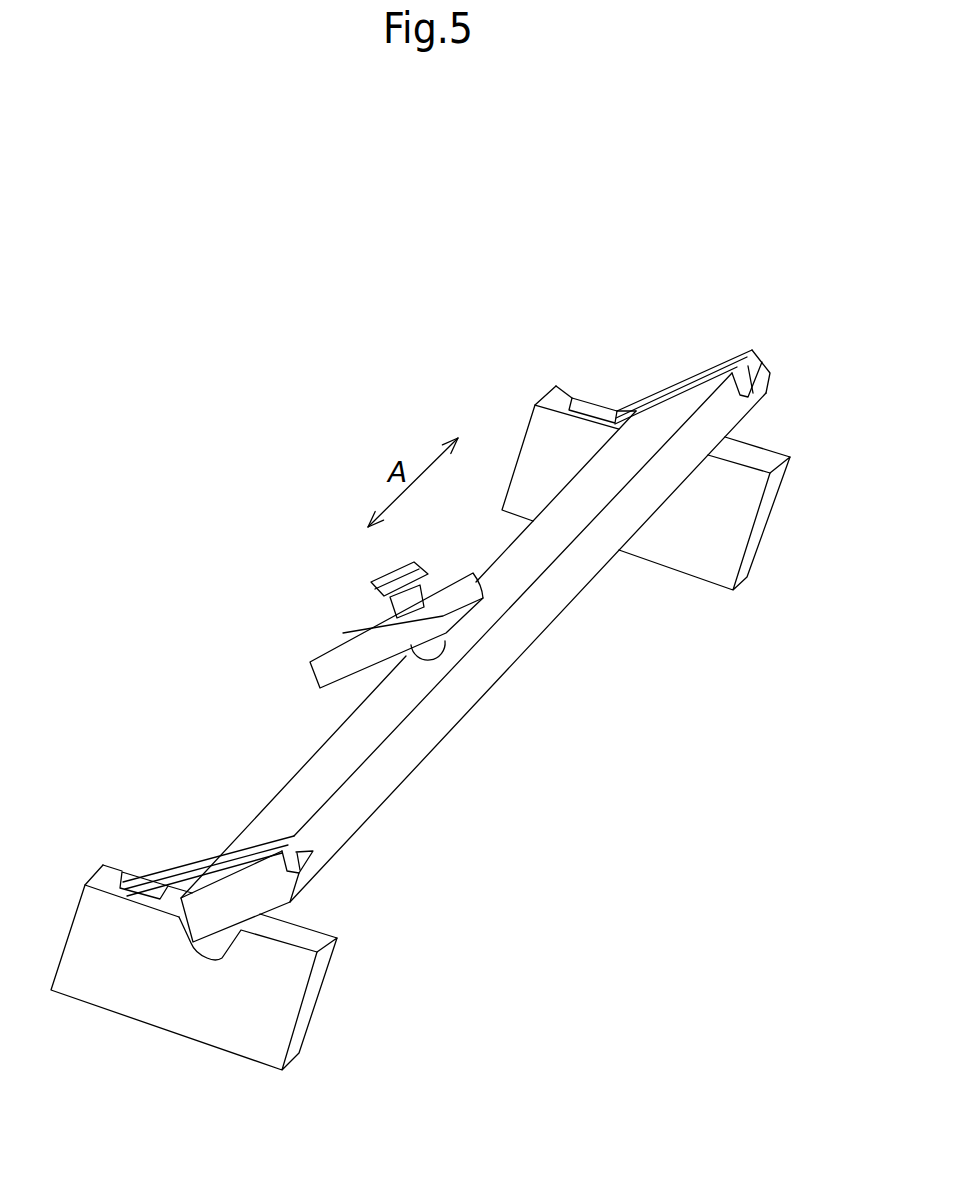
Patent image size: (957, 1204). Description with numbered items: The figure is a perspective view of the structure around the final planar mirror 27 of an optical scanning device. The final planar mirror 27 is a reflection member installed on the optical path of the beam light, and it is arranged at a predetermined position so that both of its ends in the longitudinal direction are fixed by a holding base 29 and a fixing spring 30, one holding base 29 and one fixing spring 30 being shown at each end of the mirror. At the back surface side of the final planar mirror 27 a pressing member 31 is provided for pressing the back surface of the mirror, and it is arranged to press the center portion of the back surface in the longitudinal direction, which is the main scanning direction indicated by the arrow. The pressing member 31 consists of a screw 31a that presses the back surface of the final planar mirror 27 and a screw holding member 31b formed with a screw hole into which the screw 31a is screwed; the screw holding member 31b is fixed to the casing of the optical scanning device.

The final planar mirror 27 is at (405, 752).
The holding base 29 is at (772, 510).
The fixing spring 30 is at (762, 372).
The pressing member 31 is at (339, 625).
The screw 31a is at (372, 584).
The screw holding member 31b is at (343, 633).